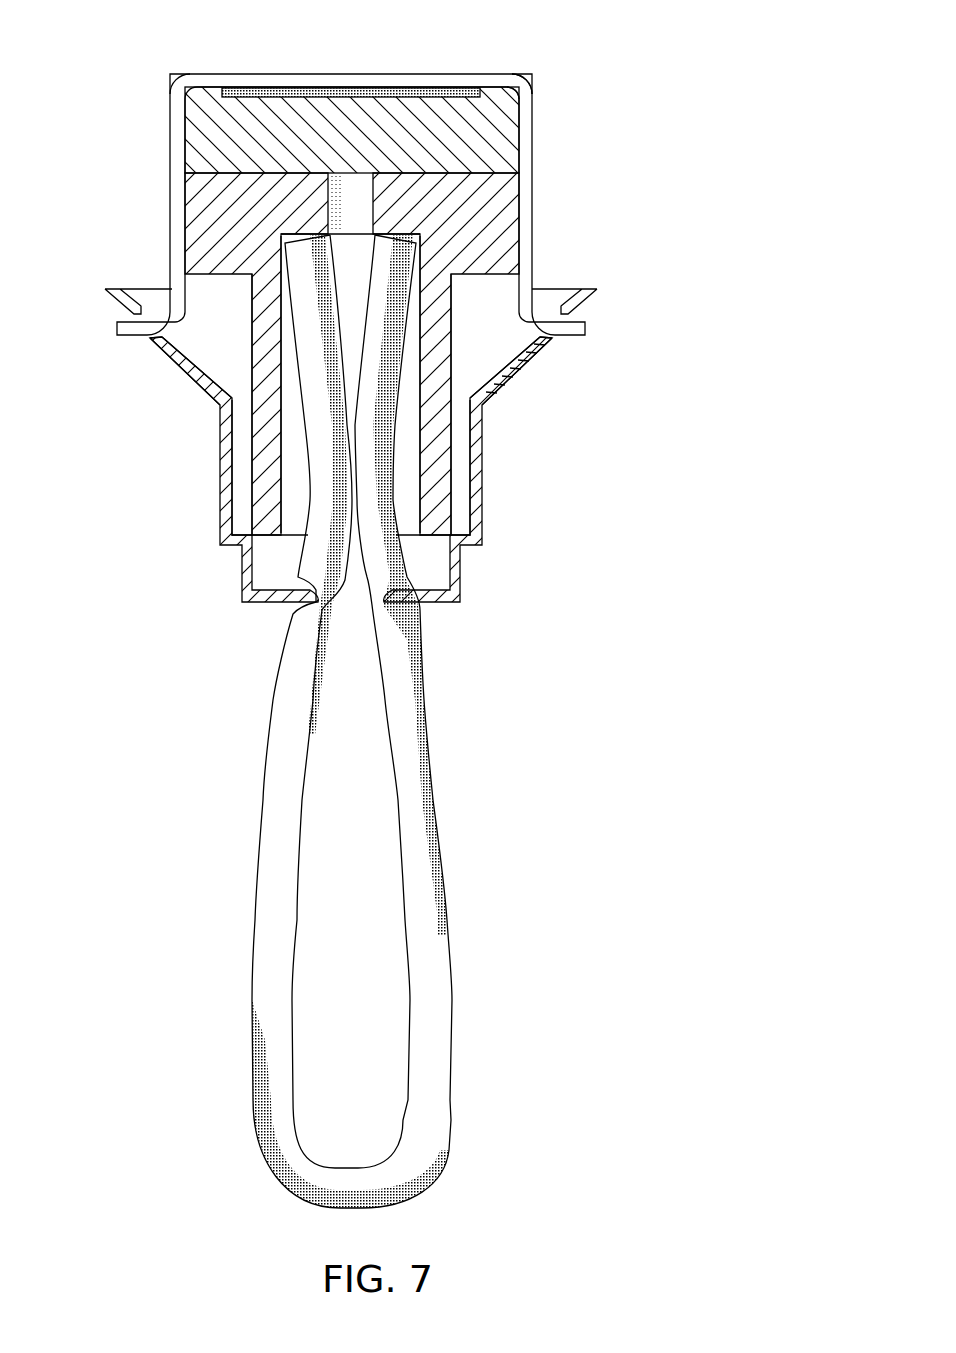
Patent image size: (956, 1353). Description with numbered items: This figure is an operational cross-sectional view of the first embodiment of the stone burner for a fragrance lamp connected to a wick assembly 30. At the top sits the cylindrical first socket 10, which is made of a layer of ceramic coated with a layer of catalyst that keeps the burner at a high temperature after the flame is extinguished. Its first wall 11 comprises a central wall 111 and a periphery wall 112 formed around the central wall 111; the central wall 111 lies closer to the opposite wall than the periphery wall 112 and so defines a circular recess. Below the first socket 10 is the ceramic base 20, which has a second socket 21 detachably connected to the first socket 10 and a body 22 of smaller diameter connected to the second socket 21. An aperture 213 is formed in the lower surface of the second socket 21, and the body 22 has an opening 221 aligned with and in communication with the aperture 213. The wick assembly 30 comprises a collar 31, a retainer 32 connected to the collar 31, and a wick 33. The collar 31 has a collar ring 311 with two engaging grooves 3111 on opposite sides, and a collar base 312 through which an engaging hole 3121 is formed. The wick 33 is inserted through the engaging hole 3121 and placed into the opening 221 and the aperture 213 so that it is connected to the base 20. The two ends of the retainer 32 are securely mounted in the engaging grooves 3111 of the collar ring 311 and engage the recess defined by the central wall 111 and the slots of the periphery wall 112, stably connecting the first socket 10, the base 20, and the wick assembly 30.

The first socket 10 is at (382, 169).
The first wall 11 is at (284, 72).
The central wall 111 is at (362, 95).
The periphery wall 112 is at (522, 77).
The retainer 32 is at (181, 157).
The base 20 is at (408, 354).
The second socket 21 is at (540, 220).
The aperture 213 is at (412, 237).
The body 22 is at (442, 458).
The opening 221 is at (408, 507).
The wick assembly 30 is at (360, 721).
The collar 31 is at (360, 445).
The collar ring 311 is at (513, 368).
The engaging grooves 3111 is at (150, 338).
The collar base 312 is at (477, 528).
The engaging hole 3121 is at (242, 518).
The wick 33 is at (417, 820).